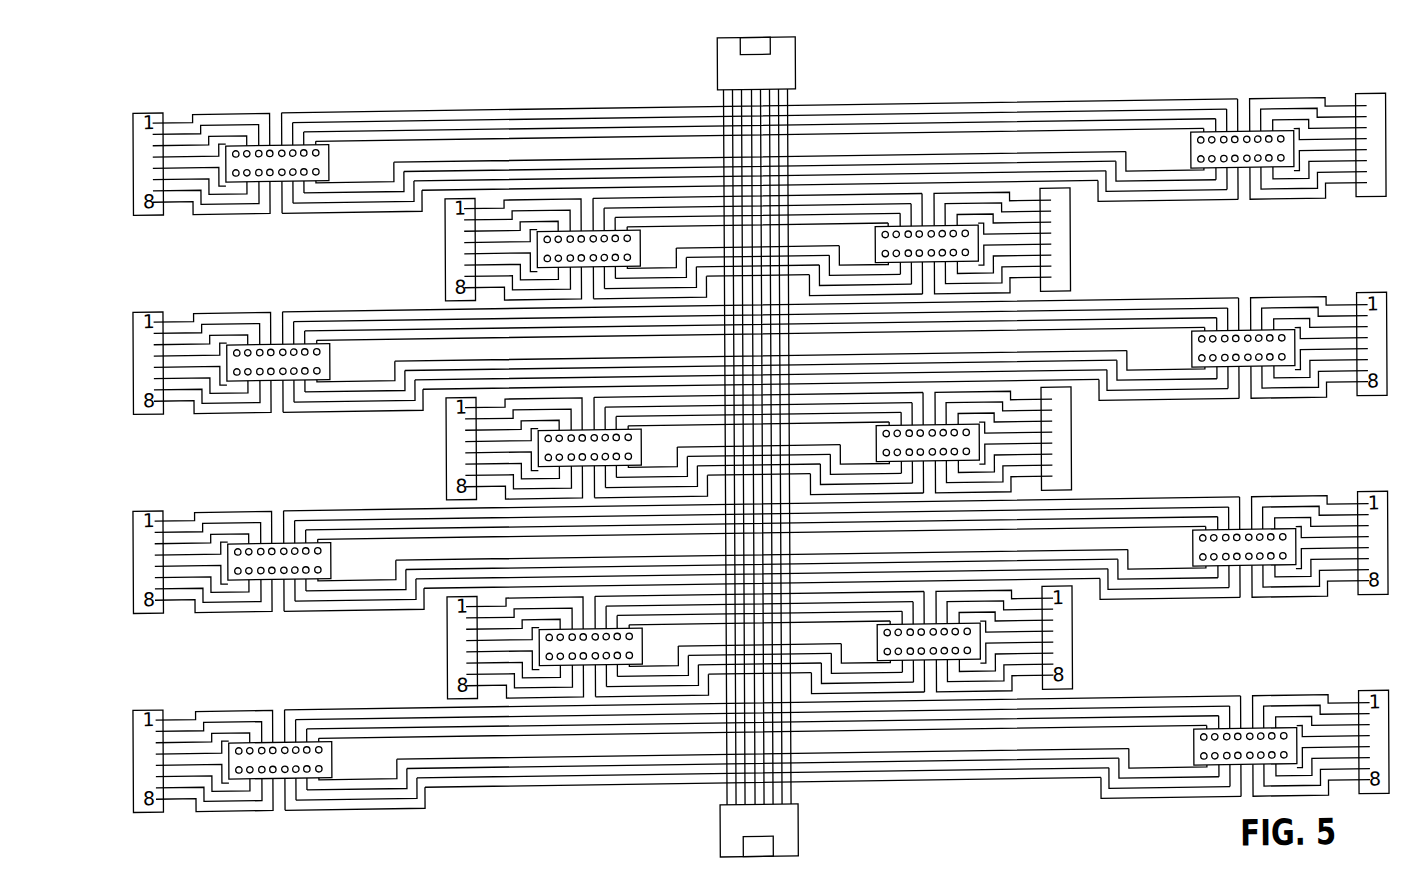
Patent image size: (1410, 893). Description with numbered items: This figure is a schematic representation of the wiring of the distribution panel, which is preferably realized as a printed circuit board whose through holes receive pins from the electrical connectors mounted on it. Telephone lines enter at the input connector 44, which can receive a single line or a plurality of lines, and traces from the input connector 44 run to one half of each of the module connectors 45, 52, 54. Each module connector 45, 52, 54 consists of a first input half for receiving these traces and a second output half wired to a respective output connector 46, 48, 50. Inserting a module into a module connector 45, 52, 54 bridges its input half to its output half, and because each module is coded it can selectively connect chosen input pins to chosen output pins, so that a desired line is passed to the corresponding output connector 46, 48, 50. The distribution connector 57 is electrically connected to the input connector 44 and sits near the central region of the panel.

The input connector 44 is at (795, 85).
The module connector 45 is at (1241, 147).
The output connector 46 is at (1366, 111).
The output connector 48 is at (1069, 253).
The output connector 50 is at (1069, 455).
The module connector 52 is at (874, 268).
The module connector 54 is at (874, 470).
The distribution connector 57 is at (794, 825).